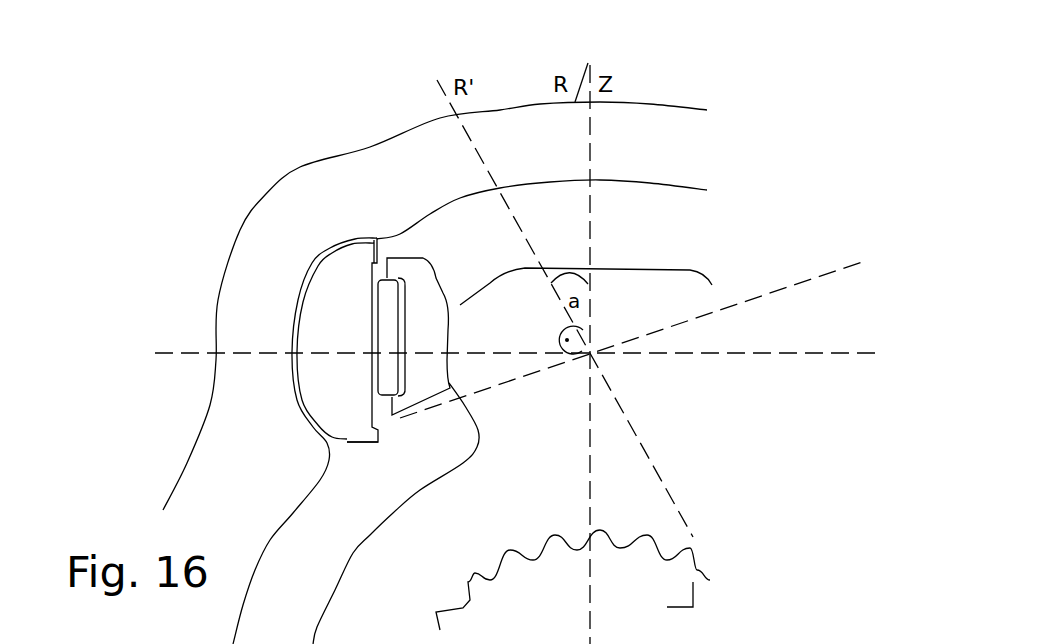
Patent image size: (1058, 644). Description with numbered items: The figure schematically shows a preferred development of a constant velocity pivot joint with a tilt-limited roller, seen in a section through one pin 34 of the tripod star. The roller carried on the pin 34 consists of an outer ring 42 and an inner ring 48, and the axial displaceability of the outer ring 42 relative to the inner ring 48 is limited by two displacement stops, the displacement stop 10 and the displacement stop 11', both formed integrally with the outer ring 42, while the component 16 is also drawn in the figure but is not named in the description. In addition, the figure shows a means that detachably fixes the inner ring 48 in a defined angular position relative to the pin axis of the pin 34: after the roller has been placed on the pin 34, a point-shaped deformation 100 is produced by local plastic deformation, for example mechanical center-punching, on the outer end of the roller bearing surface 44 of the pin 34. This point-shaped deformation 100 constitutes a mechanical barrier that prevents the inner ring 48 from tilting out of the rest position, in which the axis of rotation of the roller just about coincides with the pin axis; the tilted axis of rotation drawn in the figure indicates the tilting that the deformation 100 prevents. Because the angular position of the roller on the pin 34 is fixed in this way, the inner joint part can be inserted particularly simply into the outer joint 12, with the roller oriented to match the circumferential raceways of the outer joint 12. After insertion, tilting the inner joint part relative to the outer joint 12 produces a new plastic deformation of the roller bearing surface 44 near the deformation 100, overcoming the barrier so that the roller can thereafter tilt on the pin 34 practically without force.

The displacement stop 10 is at (363, 437).
The outer joint 12 is at (195, 305).
The housing wall 16 is at (287, 333).
The outer ring 42 is at (317, 300).
The lens holder 11' is at (333, 239).
The inner ring 48 is at (413, 277).
The point-shaped deformation 100 is at (455, 308).
The roller bearing surface 44 is at (453, 330).
The pin 34 is at (673, 290).